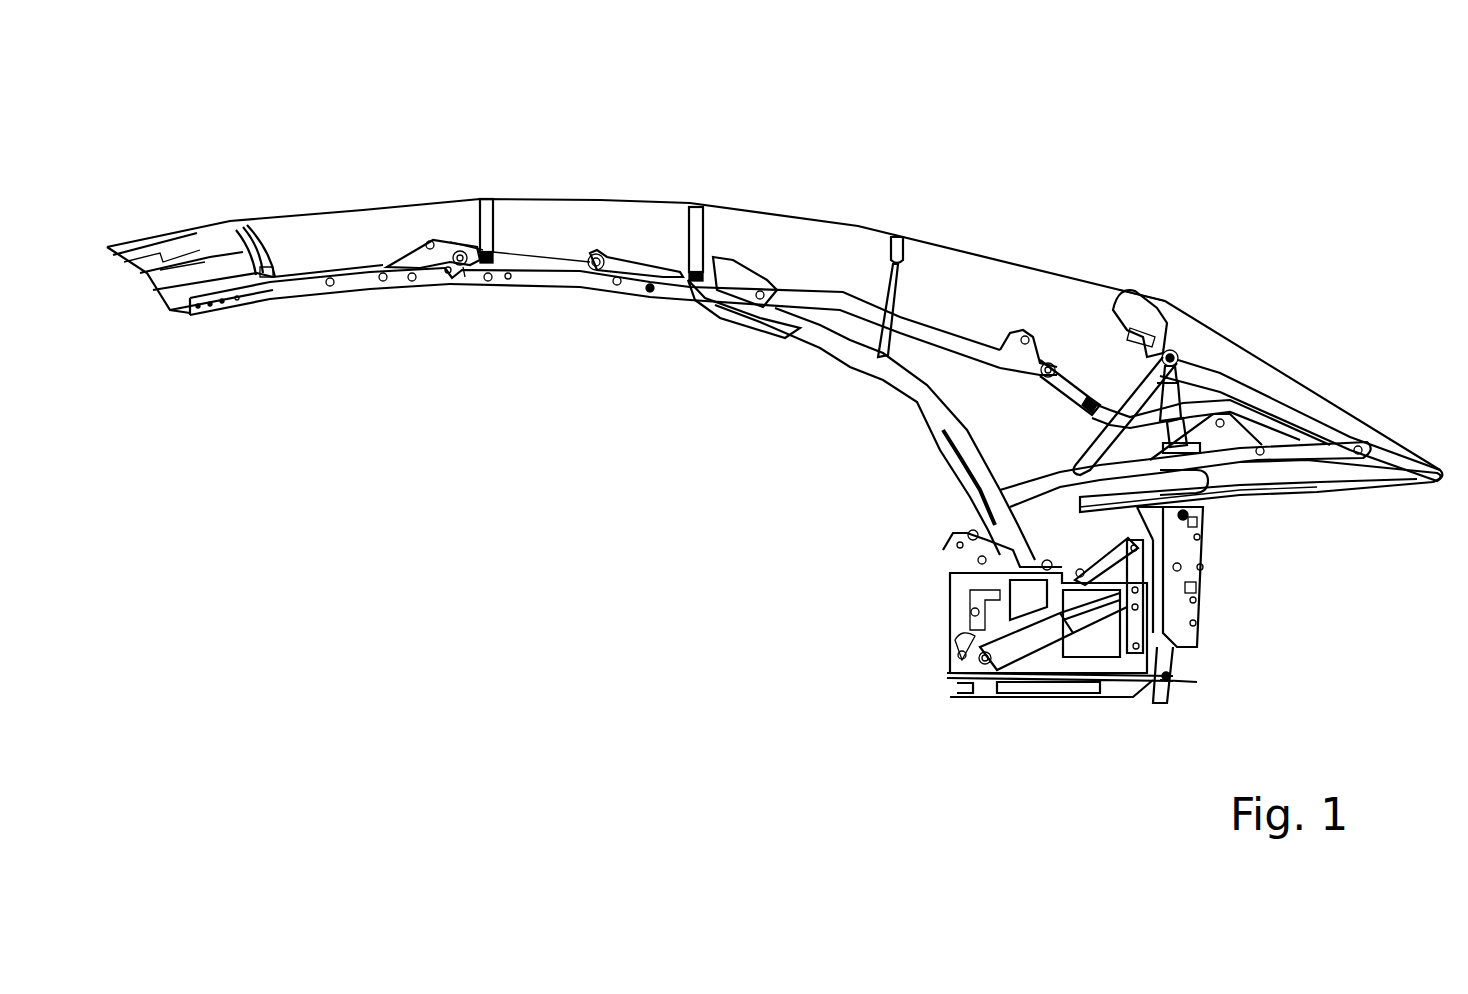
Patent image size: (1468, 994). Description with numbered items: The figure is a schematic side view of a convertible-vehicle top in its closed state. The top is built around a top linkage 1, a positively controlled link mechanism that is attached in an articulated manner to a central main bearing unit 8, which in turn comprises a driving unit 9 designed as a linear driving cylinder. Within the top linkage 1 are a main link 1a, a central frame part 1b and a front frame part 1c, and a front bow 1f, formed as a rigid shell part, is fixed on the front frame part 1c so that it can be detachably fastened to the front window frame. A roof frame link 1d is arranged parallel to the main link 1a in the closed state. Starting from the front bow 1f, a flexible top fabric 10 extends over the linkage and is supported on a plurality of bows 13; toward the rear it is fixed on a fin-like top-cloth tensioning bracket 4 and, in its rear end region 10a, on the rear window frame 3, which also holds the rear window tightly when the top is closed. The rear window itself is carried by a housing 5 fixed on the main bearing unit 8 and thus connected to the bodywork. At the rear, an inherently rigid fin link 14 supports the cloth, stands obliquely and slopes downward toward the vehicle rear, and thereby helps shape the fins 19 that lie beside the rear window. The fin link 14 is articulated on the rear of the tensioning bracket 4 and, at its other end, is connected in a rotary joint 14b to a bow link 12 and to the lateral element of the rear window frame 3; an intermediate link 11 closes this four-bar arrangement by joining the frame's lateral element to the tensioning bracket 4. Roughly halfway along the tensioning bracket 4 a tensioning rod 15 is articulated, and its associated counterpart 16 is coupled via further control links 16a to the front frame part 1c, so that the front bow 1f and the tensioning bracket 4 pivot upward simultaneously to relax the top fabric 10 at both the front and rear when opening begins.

The top linkage 1 is at (642, 387).
The main link 1a is at (897, 383).
The central frame part 1b is at (568, 282).
The front frame part 1c is at (298, 290).
The roof frame link 1d is at (935, 438).
The front bow 1f is at (215, 230).
The rear window frame 3 is at (1178, 388).
The top-cloth tensioning bracket 4 is at (1327, 490).
The housing 5 is at (1190, 570).
The main bearing unit 8 is at (940, 645).
The driving unit 9 is at (1030, 653).
The top fabric 10 is at (1205, 322).
The rear end region of the top fabric 10a is at (1128, 289).
The intermediate link 11 is at (1183, 445).
The bow link 12 is at (1100, 421).
The bows 13 is at (486, 223).
The fin link 14 is at (1310, 417).
The rotary joint 14b is at (1172, 350).
The tensioning rod 15 is at (1074, 386).
The counterpart 16 is at (937, 337).
The control links 16a is at (703, 272).
The fins 19 is at (1337, 575).